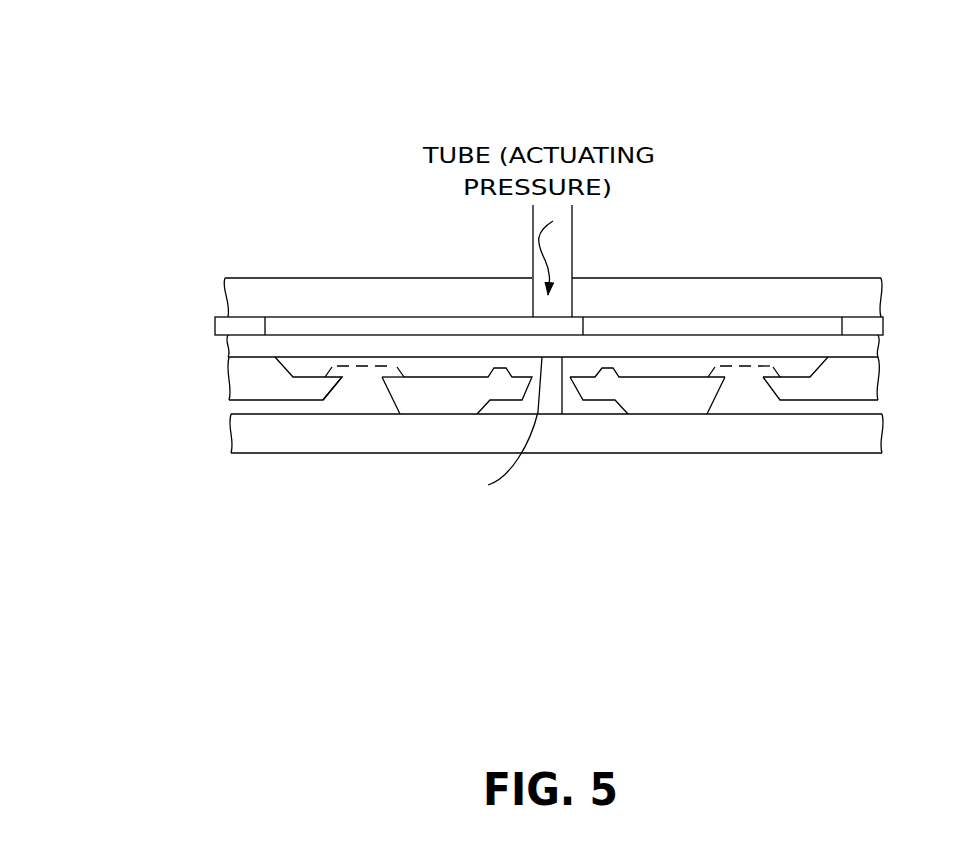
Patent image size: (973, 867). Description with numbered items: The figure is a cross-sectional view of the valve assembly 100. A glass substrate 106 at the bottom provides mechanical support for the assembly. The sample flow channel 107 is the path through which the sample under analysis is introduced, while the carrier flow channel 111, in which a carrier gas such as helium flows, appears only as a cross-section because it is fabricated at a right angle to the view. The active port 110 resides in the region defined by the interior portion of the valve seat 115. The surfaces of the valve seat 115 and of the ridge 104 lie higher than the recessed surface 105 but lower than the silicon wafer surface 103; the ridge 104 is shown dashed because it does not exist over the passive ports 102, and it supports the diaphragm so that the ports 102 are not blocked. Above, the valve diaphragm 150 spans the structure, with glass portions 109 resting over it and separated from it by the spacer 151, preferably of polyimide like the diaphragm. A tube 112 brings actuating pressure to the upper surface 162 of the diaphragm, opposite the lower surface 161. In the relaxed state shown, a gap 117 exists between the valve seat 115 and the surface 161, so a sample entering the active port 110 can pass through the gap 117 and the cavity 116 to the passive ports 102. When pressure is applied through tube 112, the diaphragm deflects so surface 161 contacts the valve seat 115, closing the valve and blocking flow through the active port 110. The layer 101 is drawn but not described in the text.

The valve assembly 100 is at (90, 47).
The substrate layer 101 is at (226, 377).
The passive ports 102 is at (350, 387).
The silicon wafer surface 103 is at (880, 355).
The ridge 104 is at (738, 378).
The surface 105 is at (416, 368).
The glass substrate 106 is at (880, 433).
The sample flow channel 107 is at (232, 405).
The glass portions 109 is at (283, 278).
The active port 110 is at (565, 378).
The carrier flow channel 111 is at (555, 408).
The tube 112 is at (573, 230).
The valve seat 115 is at (608, 367).
The cavity 116 is at (442, 364).
The gap 117 is at (590, 361).
The valve diaphragm 150 is at (227, 346).
The spacer 151 is at (215, 317).
The surface of valve diaphragm 161 is at (495, 428).
The surface of valve diaphragm 162 is at (583, 317).